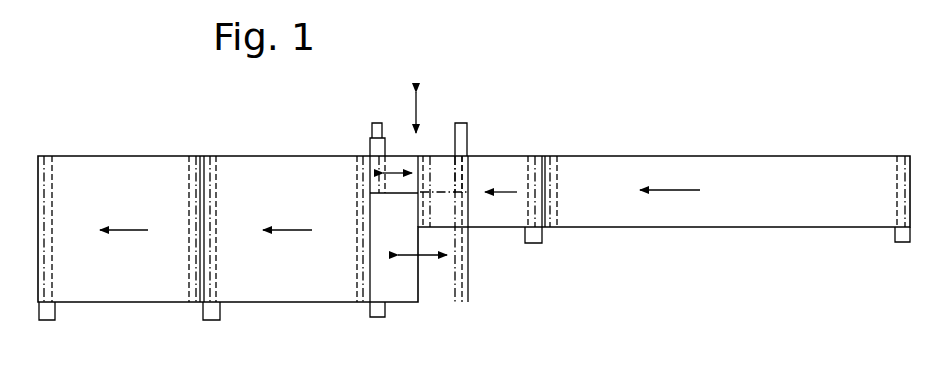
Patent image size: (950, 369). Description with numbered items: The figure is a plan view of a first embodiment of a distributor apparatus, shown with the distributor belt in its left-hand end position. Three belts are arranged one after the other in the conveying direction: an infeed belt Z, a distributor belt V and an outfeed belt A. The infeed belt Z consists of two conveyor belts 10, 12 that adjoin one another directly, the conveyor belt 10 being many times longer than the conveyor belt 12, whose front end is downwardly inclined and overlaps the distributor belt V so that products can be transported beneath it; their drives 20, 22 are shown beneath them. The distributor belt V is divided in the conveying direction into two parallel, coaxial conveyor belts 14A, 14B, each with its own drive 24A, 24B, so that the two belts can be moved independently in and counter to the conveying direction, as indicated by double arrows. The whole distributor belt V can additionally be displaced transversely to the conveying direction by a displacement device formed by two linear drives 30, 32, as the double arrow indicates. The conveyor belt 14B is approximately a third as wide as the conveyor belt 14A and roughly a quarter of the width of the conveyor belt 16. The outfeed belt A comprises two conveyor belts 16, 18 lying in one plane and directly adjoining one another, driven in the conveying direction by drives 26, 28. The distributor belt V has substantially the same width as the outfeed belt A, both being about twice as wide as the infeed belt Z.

The conveyor belt 10 is at (723, 212).
The conveyor belt 12 is at (492, 213).
The conveyor belt 14A is at (445, 290).
The conveyor belt 14B is at (401, 160).
The conveyor belt 16 is at (290, 283).
The conveyor belt 18 is at (123, 288).
The drive 20 is at (900, 230).
The drive 22 is at (540, 240).
The drive 24A is at (382, 317).
The drive 24B is at (374, 146).
The drive 26 is at (217, 317).
The drive 28 is at (52, 317).
The linear drive 30 is at (465, 140).
The linear drive 32 is at (375, 128).
The outfeed belt A is at (170, 142).
The distributor belt V is at (436, 127).
The infeed belt Z is at (688, 140).